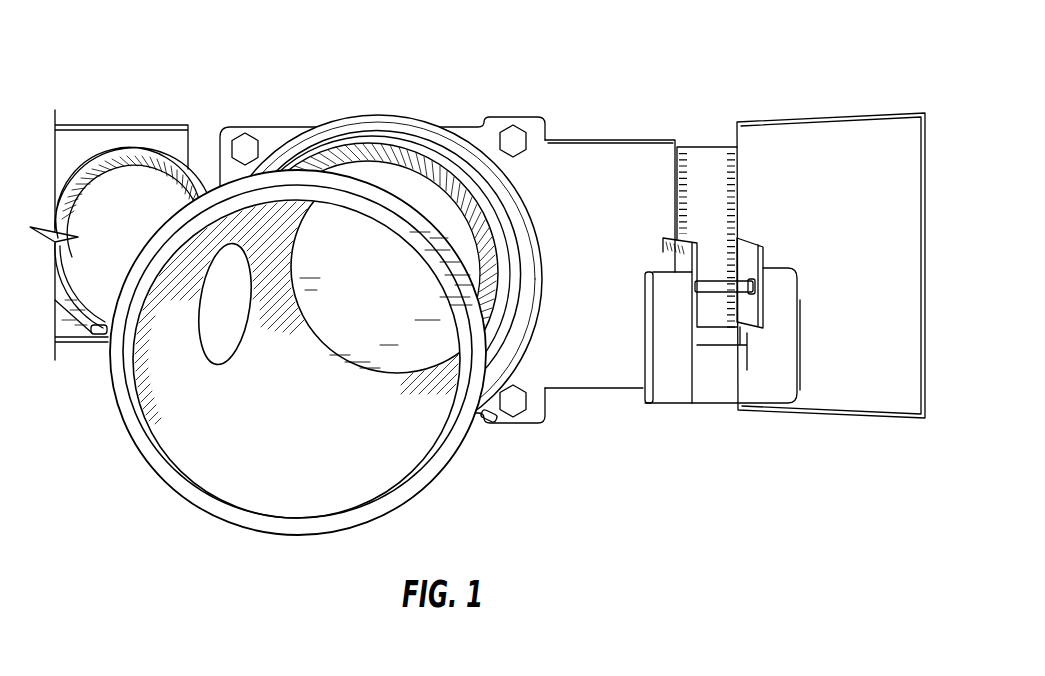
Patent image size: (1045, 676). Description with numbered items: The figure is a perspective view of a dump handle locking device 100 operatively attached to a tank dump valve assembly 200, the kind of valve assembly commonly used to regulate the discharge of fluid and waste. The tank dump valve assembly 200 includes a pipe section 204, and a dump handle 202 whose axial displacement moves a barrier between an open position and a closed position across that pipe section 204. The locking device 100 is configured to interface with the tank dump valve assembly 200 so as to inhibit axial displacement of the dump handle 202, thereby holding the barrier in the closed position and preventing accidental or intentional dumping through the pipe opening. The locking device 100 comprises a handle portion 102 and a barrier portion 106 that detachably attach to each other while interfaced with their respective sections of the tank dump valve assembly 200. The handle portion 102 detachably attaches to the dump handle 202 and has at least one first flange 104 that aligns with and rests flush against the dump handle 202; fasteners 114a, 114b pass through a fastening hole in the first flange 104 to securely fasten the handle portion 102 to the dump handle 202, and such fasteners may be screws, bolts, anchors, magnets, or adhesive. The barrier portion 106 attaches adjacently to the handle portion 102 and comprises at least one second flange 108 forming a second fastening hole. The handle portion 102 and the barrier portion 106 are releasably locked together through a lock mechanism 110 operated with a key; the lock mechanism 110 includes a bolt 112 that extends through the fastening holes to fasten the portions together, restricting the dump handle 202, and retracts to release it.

The dump handle locking device 100 is at (808, 450).
The handle portion 102 is at (879, 128).
The first flange 104 is at (766, 254).
The barrier portion 106 is at (628, 156).
The second flange 108 is at (668, 256).
The lock mechanism 110 is at (716, 392).
The bolt 112 is at (727, 272).
The fastener 114a is at (518, 133).
The fastener 114b is at (517, 407).
The tank dump valve assembly 200 is at (174, 50).
The dump handle 202 is at (711, 151).
The pipe section 204 is at (447, 131).